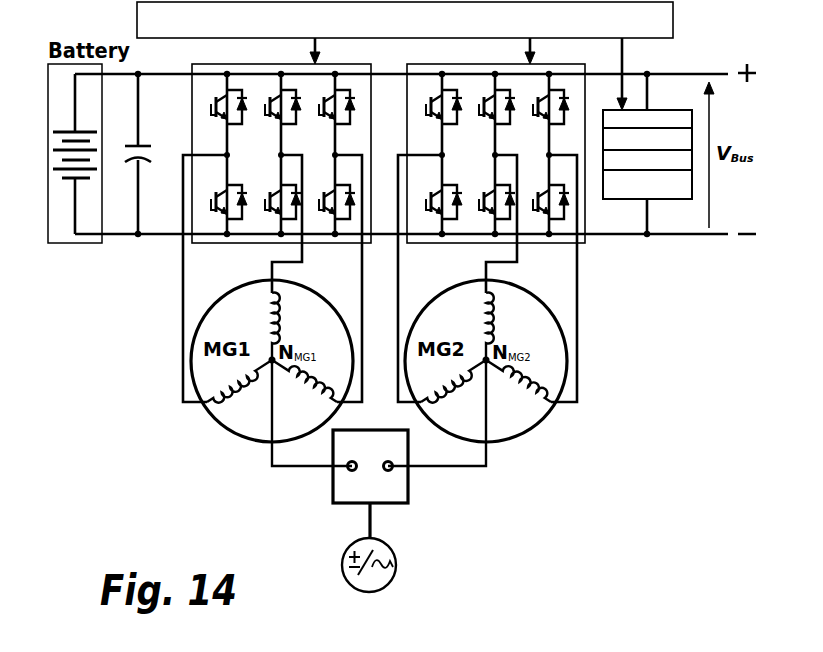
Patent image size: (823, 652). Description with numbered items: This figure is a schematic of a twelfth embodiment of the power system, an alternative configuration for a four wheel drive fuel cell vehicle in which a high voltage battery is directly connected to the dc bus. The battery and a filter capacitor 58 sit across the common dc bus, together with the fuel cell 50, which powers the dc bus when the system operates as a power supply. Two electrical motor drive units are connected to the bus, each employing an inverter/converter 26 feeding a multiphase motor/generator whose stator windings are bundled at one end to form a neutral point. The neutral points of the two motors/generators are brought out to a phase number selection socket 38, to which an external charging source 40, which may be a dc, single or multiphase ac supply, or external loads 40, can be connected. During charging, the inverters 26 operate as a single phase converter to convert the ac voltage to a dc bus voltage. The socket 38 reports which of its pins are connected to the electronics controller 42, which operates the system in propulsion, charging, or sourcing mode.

The electronics controller 42 is at (657, 28).
The filter capacitor 58 is at (150, 157).
The inverter/converter 26 is at (198, 243).
The fuel cell 50 is at (637, 188).
The phase number selection socket 38 is at (393, 488).
The external charging source 40 is at (392, 562).